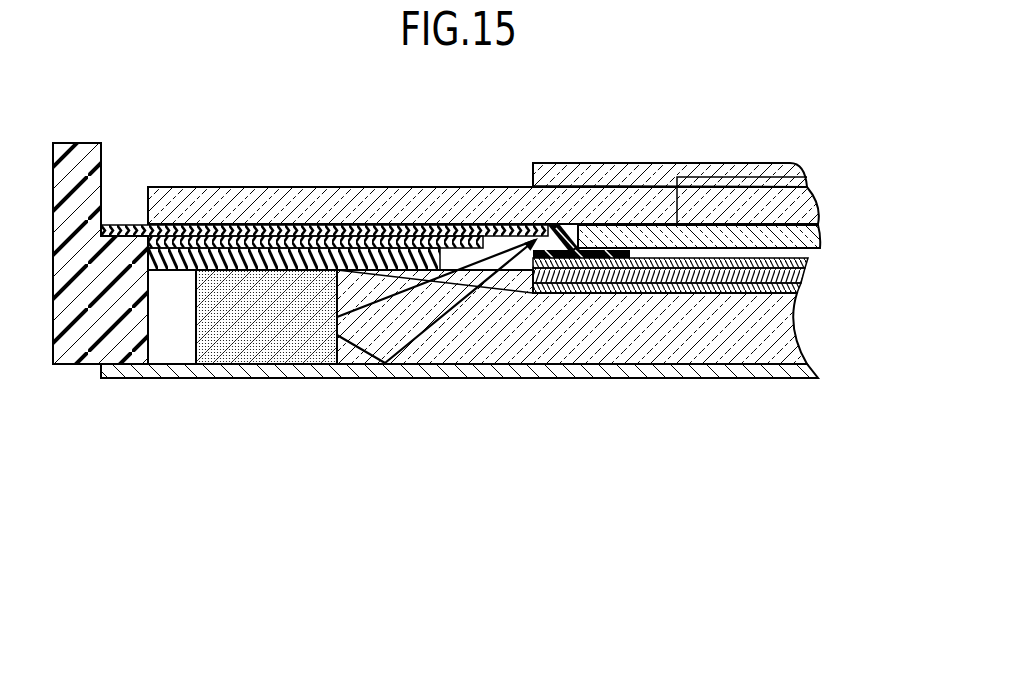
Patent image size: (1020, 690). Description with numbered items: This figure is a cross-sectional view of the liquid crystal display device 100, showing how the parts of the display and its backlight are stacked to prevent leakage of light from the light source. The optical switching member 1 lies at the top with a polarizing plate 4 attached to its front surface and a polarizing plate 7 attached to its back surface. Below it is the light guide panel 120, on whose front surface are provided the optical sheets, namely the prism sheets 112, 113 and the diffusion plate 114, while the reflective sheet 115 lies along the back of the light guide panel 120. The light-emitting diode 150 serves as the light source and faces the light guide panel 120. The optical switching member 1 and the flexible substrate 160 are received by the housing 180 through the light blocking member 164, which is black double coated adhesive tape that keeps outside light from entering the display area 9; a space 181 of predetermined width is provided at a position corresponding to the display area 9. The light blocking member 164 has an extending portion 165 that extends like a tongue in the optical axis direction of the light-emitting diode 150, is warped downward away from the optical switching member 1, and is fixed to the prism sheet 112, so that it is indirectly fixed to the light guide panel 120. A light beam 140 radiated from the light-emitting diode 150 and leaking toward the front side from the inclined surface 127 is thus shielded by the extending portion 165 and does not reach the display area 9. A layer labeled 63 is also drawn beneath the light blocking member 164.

The liquid crystal display device 100 is at (443, 486).
The optical switching member 1 is at (820, 205).
The polarizing plate 4 is at (800, 170).
The polarizing plate 7 is at (822, 236).
The display area 9 is at (740, 177).
The wiring layer 63 is at (237, 244).
The prism sheet 112 is at (810, 264).
The prism sheet 113 is at (803, 277).
The diffusion plate 114 is at (800, 290).
The reflective sheet 115 is at (758, 378).
The light guide panel 120 is at (802, 338).
The inclined surface 127 is at (503, 288).
The light beam 140 is at (428, 284).
The light-emitting diode 150 is at (277, 345).
The flexible substrate 160 is at (180, 270).
The light blocking member 164 is at (120, 225).
The extending portion 165 is at (566, 225).
The housing 180 is at (74, 364).
The space 181 is at (818, 252).